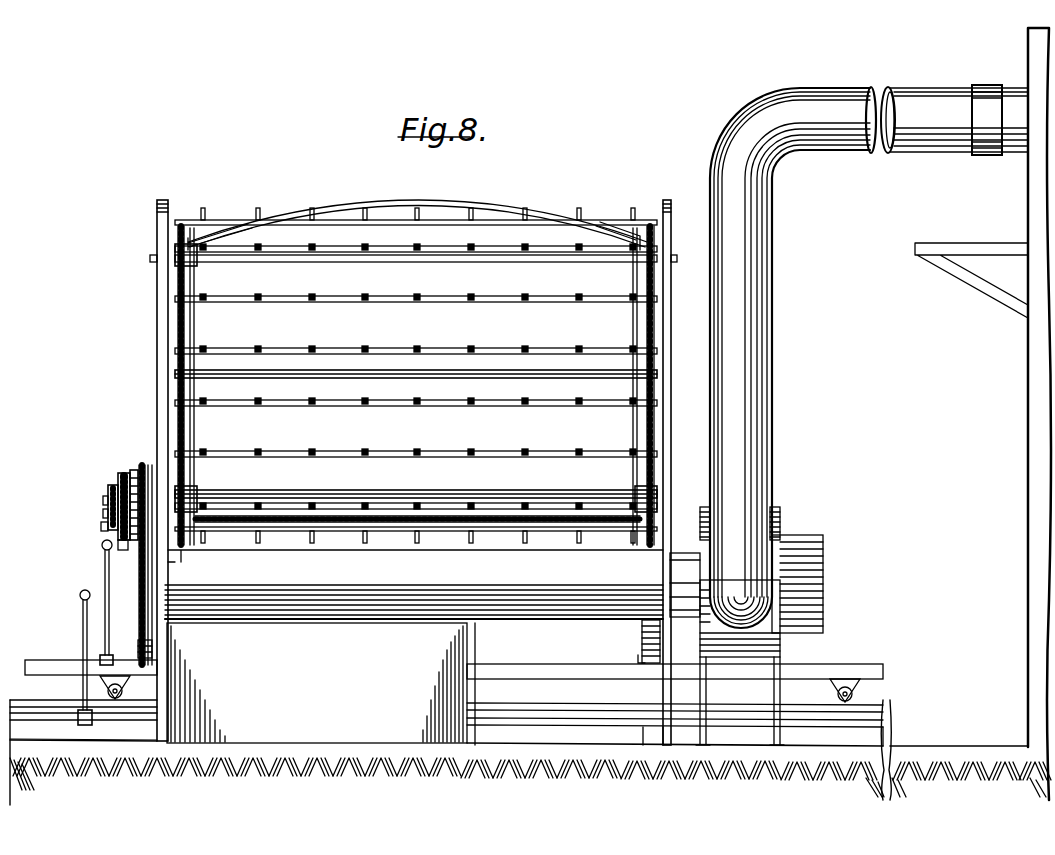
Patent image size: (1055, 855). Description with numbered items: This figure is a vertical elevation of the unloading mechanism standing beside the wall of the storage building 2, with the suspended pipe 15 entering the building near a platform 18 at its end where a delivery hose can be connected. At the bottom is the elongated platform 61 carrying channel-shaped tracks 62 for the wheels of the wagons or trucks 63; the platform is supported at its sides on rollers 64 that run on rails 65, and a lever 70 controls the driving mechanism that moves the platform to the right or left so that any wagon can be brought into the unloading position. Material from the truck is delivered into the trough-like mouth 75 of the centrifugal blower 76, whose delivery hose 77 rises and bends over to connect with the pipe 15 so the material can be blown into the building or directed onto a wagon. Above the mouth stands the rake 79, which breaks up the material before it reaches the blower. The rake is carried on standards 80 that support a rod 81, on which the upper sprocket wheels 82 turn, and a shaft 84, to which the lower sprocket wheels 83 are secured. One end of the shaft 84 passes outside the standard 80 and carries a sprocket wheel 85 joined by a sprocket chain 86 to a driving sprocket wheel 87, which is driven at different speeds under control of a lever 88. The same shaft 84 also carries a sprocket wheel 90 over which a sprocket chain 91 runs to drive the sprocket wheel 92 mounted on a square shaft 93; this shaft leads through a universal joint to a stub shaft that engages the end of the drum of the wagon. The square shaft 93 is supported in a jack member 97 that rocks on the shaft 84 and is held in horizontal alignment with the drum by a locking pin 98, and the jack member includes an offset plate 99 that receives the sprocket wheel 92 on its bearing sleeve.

The building 2 is at (1016, 392).
The pipe 15 is at (1012, 88).
The platform 18 is at (970, 230).
The platform 61 is at (845, 669).
The tracks 62 is at (640, 659).
The wagons or trucks 63 is at (448, 191).
The rollers 64 is at (100, 686).
The rails 65 is at (885, 713).
The lever 70 is at (82, 626).
The trough-like mouth 75 is at (528, 604).
The centrifugal blower 76 is at (780, 515).
The delivery hose 77 is at (773, 362).
The rake 79 is at (237, 219).
The standards 80 is at (160, 328).
The rod 81 is at (318, 262).
The upper sprocket wheels 82 is at (199, 265).
The lower sprocket wheels 83 is at (628, 495).
The shaft 84 is at (208, 495).
The sprocket wheel 85 is at (143, 572).
The sprocket chain 86 is at (149, 599).
The driving sprocket wheel 87 is at (146, 636).
The lever 88 is at (104, 574).
The sprocket wheel 90 is at (110, 485).
The sprocket chain 91 is at (103, 512).
The sprocket wheel 92 is at (123, 548).
The square shaft 93 is at (101, 528).
The jack member 97 is at (138, 469).
The locking pin 98 is at (122, 474).
The plate 99 is at (103, 500).